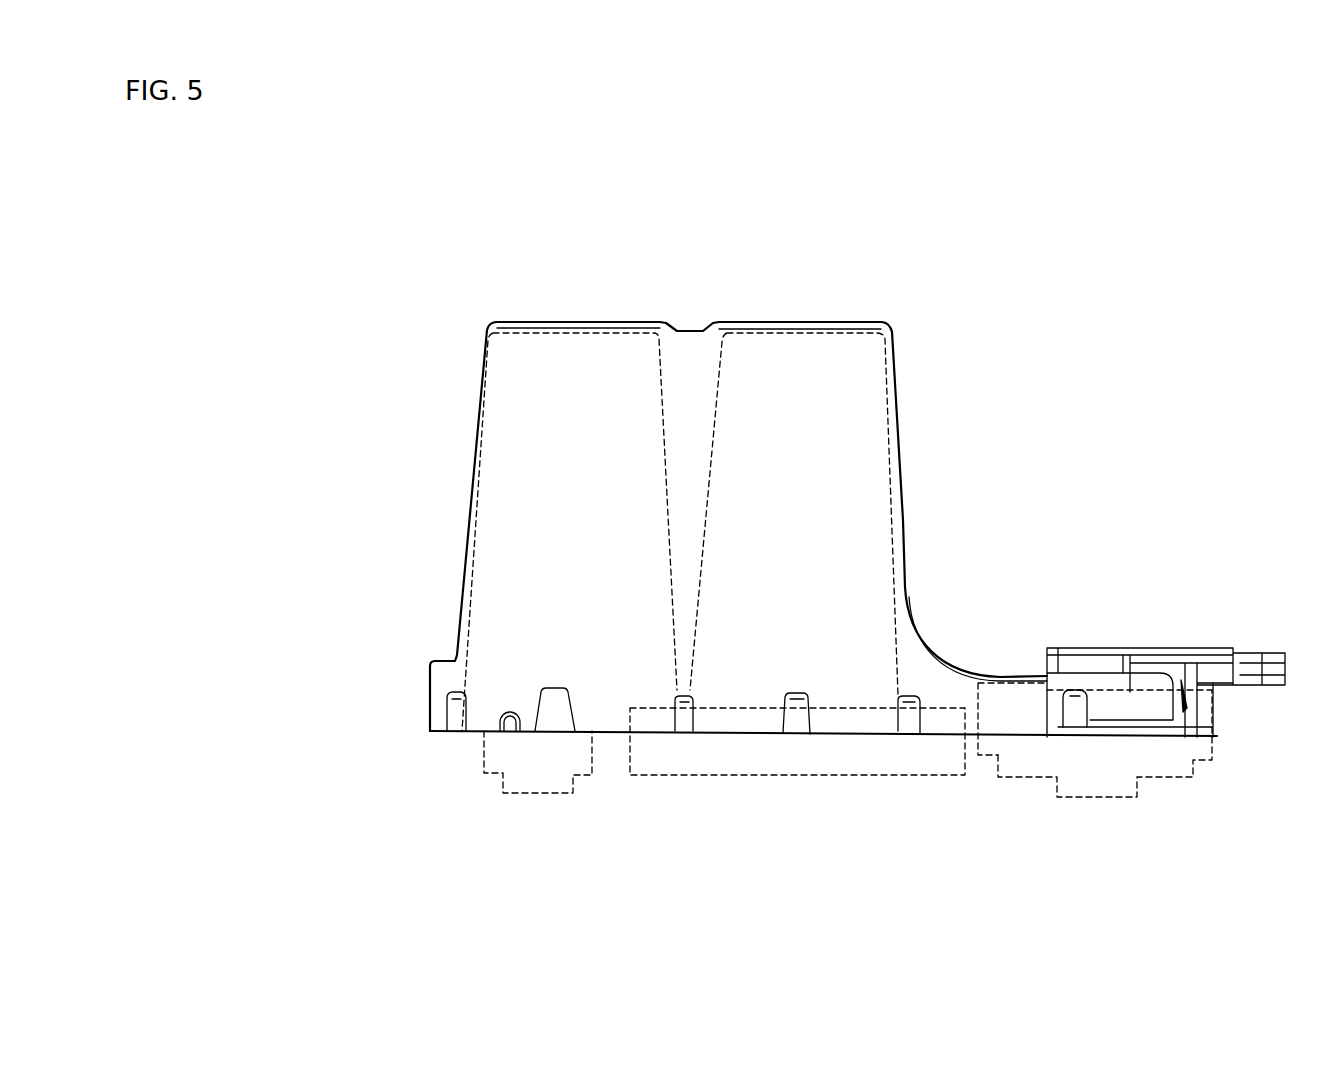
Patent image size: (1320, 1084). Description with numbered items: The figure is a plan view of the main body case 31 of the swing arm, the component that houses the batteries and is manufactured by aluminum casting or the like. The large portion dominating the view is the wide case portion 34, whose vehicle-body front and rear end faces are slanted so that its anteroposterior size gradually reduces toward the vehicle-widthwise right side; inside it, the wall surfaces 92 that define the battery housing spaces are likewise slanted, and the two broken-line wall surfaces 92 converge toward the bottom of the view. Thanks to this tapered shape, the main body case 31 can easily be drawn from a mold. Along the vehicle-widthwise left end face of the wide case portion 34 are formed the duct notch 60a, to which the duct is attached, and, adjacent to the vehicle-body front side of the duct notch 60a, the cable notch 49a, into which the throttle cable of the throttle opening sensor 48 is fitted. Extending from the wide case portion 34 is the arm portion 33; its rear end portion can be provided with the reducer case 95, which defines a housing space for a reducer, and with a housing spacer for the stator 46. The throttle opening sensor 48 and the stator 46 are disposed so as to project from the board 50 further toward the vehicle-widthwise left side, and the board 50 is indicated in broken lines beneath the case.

The main body case 31 is at (693, 316).
The wide case portion 34 is at (512, 475).
The arm portion 33 is at (1003, 698).
The reducer case 95 is at (1246, 668).
The cable notch 49a is at (510, 718).
The duct notch 60a is at (552, 711).
The throttle opening sensor 48 is at (522, 796).
The wall surface 92 is at (672, 614).
The board 50 is at (783, 777).
The stator 46 is at (1097, 798).